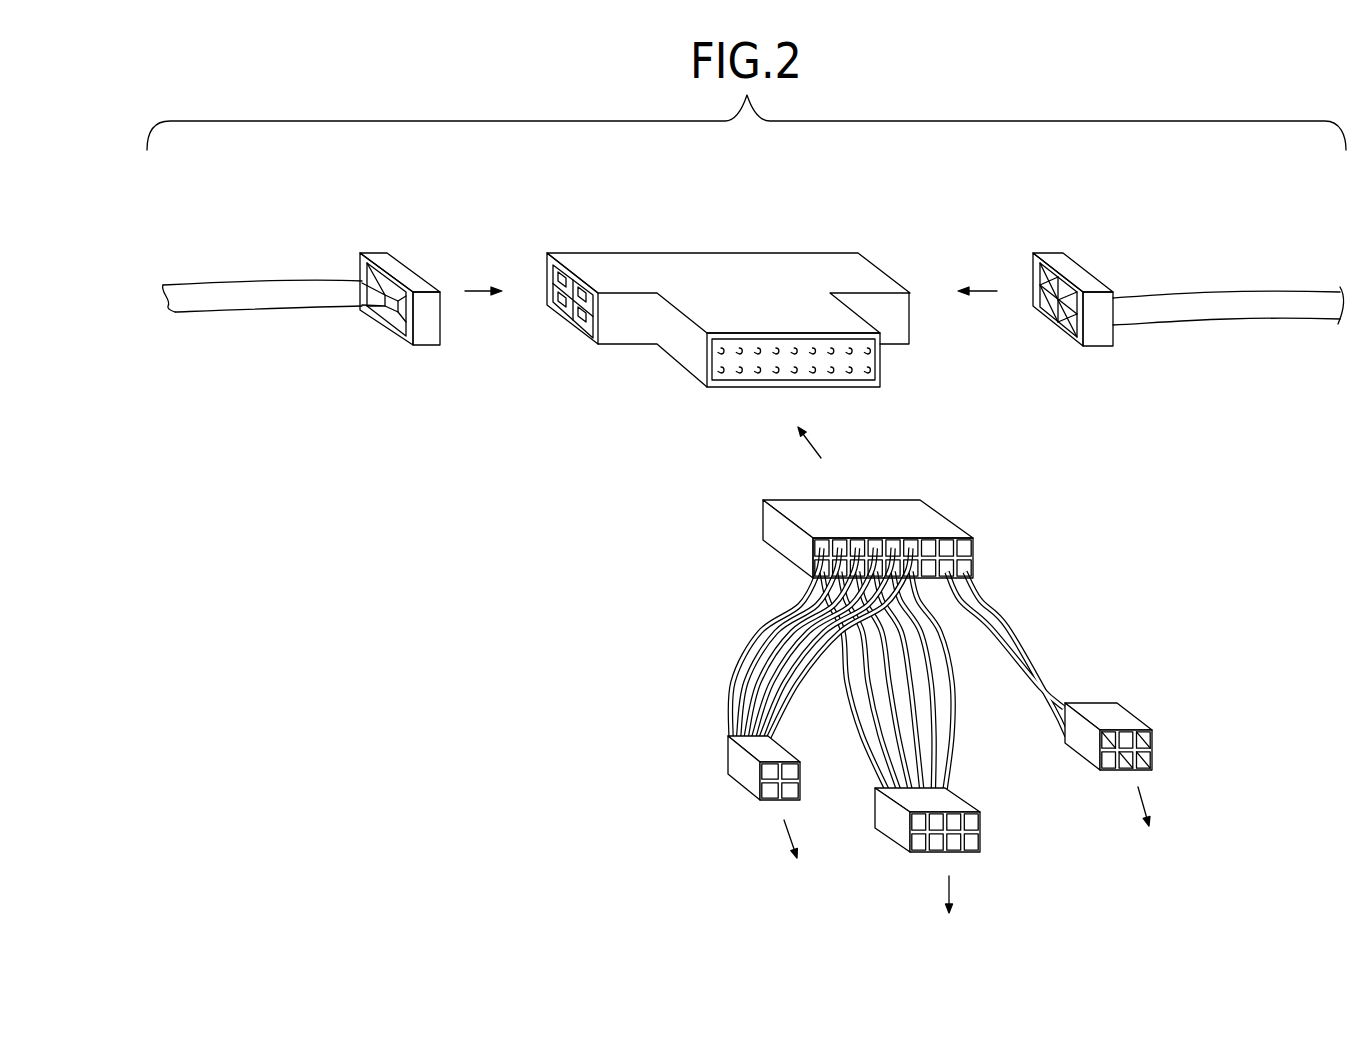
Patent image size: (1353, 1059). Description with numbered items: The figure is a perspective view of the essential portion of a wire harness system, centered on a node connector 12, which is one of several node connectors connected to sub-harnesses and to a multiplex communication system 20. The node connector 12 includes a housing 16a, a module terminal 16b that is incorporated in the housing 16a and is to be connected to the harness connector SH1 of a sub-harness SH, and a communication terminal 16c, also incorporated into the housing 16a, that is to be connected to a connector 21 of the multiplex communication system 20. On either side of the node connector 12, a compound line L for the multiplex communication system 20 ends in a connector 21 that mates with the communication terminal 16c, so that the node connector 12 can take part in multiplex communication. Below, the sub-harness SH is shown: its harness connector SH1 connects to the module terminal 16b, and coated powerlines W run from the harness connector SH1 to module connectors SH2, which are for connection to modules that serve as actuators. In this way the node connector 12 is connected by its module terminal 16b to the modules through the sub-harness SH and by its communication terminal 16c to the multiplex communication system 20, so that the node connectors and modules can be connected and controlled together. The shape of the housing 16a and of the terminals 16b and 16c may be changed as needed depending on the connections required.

The node connector 12 is at (717, 316).
The housing 16a is at (800, 268).
The module terminal 16b is at (777, 374).
The communication terminal 16c is at (585, 336).
The connector 21 is at (428, 337).
The compound line L is at (300, 283).
The multiplex communication system 20 is at (1180, 303).
The sub-harness SH is at (954, 655).
The harness connector SH1 is at (922, 510).
The module connector SH2 is at (1120, 713).
The coated powerline W is at (953, 687).